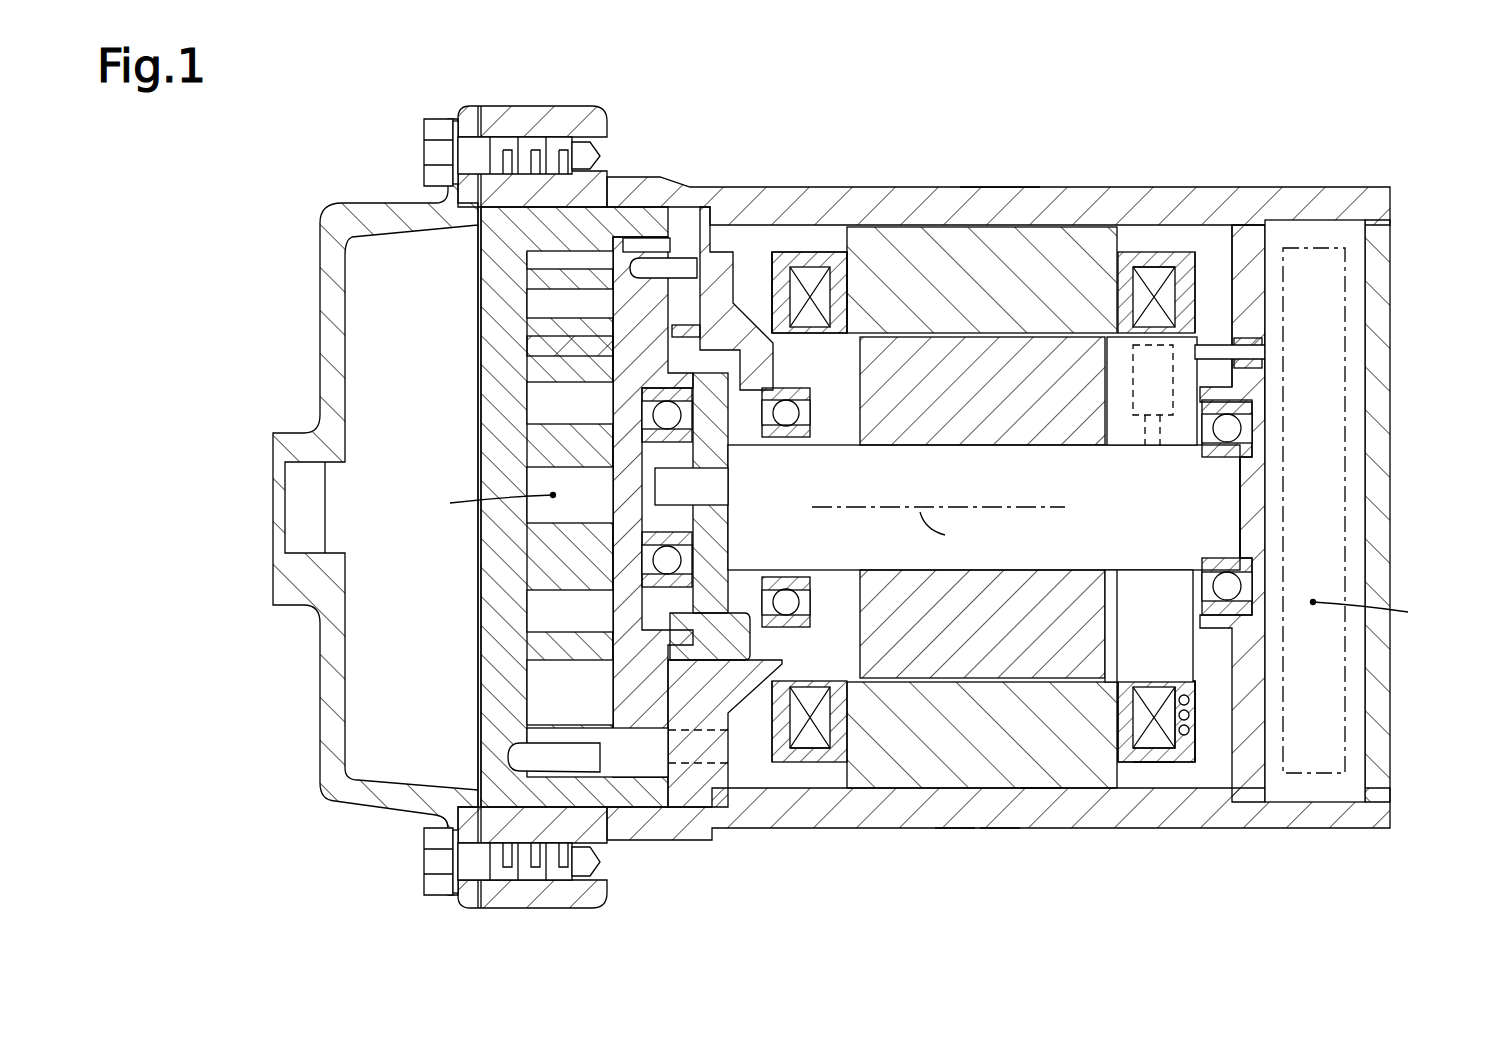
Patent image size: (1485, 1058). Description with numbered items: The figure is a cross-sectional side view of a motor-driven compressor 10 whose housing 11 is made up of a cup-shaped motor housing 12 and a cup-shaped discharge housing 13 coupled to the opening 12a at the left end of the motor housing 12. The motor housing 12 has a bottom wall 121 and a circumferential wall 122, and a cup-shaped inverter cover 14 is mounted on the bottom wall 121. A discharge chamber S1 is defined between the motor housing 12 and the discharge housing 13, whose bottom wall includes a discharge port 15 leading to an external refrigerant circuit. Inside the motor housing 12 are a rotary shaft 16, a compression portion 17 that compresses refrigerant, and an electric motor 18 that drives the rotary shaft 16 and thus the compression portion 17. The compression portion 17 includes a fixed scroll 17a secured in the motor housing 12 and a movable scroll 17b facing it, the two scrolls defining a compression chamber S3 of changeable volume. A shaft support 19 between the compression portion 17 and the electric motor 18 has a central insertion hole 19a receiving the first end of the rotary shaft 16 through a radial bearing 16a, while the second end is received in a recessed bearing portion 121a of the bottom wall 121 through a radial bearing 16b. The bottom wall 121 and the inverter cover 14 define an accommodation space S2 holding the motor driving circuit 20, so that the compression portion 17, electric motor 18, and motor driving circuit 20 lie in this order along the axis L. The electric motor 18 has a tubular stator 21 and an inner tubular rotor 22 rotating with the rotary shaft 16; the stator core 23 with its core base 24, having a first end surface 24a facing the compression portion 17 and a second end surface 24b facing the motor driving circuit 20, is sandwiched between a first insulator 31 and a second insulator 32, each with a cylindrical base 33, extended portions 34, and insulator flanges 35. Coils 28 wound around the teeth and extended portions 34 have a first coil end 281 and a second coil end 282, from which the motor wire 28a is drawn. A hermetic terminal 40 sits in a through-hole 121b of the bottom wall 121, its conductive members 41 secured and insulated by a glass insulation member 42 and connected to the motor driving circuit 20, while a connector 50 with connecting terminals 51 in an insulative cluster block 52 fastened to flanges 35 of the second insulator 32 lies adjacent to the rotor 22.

The motor-driven compressor 10 is at (297, 136).
The housing 11 is at (668, 205).
The motor housing 12 is at (954, 507).
The opening 12a is at (522, 220).
The discharge housing 13 is at (372, 208).
The inverter cover 14 is at (1378, 567).
The discharge port 15 is at (302, 507).
The rotary shaft 16 is at (947, 536).
The radial bearing 16a is at (788, 438).
The radial bearing 16b is at (1222, 456).
The compression portion 17 is at (556, 485).
The fixed scroll 17a is at (500, 322).
The movable scroll 17b is at (518, 415).
The electric motor 18 is at (922, 222).
The shaft support 19 is at (682, 808).
The insertion hole 19a is at (760, 595).
The motor driving circuit 20 is at (1352, 507).
The stator 21 is at (900, 790).
The rotor 22 is at (1040, 788).
The stator core 23 is at (1000, 790).
The core base 24 is at (955, 790).
The first end surface 24a is at (830, 765).
The second end surface 24b is at (1098, 765).
The coils 28 is at (812, 275).
The motor wire 28a is at (1190, 730).
The first insulator 31 is at (775, 668).
The second insulator 32 is at (1198, 765).
The base 33 is at (796, 265).
The extended portions 34 is at (852, 282).
The insulator flanges 35 is at (812, 333).
The hermetic terminal 40 is at (1292, 278).
The conductive members 41 is at (1292, 352).
The insulation member 42 is at (1268, 378).
The connector 50 is at (1112, 392).
The connecting terminals 51 is at (1132, 410).
The cluster block 52 is at (1158, 272).
The bottom wall 121 is at (1285, 513).
The bearing portion 121a is at (1212, 560).
The through-hole 121b is at (1288, 338).
The circumferential wall 122 is at (1000, 188).
The first coil end 281 is at (777, 255).
The second coil end 282 is at (1197, 255).
The discharge chamber S1 is at (405, 652).
The accommodation space S2 is at (1379, 617).
The compression chamber S3 is at (481, 505).
The axis L is at (830, 575).